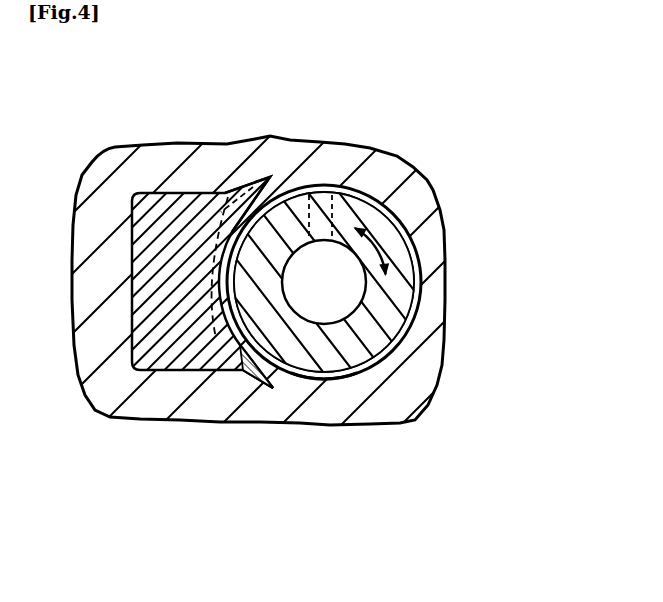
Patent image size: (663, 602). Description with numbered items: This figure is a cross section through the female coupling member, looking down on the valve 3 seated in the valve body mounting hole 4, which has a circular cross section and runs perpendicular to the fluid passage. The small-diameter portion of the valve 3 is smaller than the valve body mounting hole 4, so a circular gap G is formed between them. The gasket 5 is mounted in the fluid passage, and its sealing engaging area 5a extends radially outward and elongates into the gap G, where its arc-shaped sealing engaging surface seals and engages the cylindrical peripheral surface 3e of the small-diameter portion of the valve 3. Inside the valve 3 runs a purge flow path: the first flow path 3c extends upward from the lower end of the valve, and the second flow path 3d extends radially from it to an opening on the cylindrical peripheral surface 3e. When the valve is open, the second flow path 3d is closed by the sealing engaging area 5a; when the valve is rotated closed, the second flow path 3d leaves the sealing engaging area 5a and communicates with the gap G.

The circular gap G is at (397, 152).
The valve 3 is at (383, 333).
The first flow path 3c is at (350, 289).
The second flow path 3d is at (320, 187).
The cylindrical peripheral surface 3e is at (328, 379).
The valve body mounting hole 4 is at (415, 197).
The gasket 5 is at (166, 212).
The sealing engaging area 5a is at (234, 182).